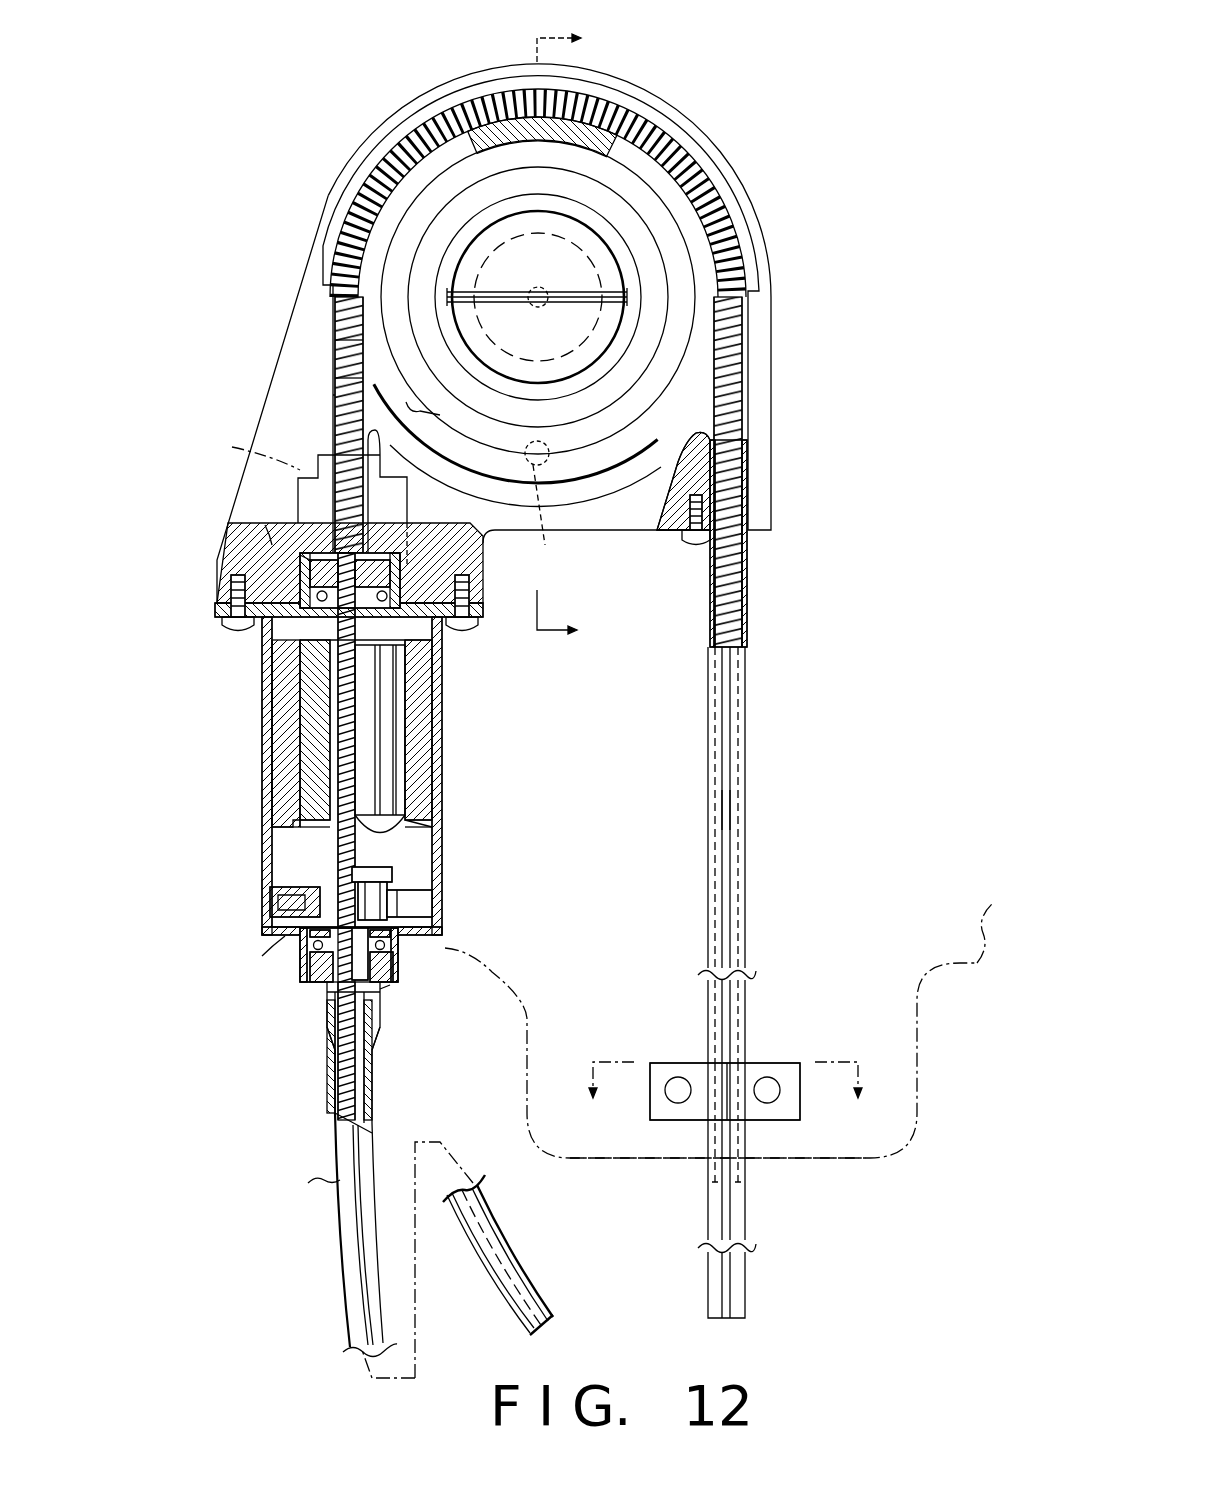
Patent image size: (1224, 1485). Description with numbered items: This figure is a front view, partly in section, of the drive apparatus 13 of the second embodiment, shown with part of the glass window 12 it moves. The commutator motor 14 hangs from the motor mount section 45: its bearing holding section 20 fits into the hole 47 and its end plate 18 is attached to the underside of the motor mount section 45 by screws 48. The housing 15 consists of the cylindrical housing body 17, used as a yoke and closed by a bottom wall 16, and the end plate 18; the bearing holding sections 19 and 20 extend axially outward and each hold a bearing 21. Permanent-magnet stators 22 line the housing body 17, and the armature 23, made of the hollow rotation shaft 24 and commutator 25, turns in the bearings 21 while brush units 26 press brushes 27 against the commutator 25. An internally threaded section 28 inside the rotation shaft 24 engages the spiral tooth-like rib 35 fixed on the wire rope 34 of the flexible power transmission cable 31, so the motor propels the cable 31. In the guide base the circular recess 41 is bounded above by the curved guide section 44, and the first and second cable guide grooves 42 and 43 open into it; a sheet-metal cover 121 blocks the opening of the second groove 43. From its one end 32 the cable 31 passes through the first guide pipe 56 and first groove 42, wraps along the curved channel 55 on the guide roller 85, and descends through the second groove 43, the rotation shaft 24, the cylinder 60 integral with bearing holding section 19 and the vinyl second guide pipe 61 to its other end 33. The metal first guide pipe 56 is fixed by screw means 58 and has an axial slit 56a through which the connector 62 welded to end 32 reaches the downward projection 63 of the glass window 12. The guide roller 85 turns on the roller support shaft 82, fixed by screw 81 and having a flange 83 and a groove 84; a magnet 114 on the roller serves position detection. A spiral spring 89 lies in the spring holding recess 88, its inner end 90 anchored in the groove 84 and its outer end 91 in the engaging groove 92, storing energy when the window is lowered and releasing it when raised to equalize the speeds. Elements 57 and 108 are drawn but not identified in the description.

The glass window 12 is at (680, 1140).
The drive apparatus 13 is at (298, 266).
The commutator motor 14 is at (445, 776).
The housing 15 is at (245, 938).
The bottom wall 16 is at (425, 503).
The housing body 17 is at (262, 745).
The end plate 18 is at (256, 640).
The bearing holding section 19 is at (302, 984).
The bearing holding section 20 is at (302, 530).
The bearings 21 is at (384, 989).
The stators 22 is at (416, 736).
The armature 23 is at (411, 830).
The rotation shaft 24 is at (314, 830).
The commutator 25 is at (390, 876).
The brush units 26 is at (280, 886).
The brushes 27 is at (296, 934).
The internally threaded section 28 is at (270, 525).
The power transmission cable 31 is at (338, 395).
The one end of the cable 32 is at (743, 1178).
The other end of the cable 33 is at (493, 1235).
The wire rope 34 is at (338, 378).
The spiral tooth-like rib 35 is at (337, 355).
The recess 41 is at (584, 502).
The first cable guide groove 42 is at (742, 504).
The second cable guide groove 43 is at (337, 433).
The curved guide section 44 is at (641, 86).
The motor mount section 45 is at (481, 580).
The hole 47 is at (398, 560).
The screws 48 is at (230, 600).
The curved channel 55 is at (420, 126).
The first guide pipe 56 is at (746, 862).
The slit 56a is at (733, 808).
The boss 57 is at (680, 533).
The screw means 58 is at (692, 548).
The cylinder 60 is at (379, 1016).
The second guide pipe 61 is at (333, 1235).
The connector 62 is at (672, 1061).
The downward projection 63 is at (618, 1146).
The screw 81 is at (530, 306).
The roller support shaft 82 is at (596, 266).
The flange 83 is at (690, 124).
The groove 84 is at (500, 298).
The guide roller 85 is at (724, 240).
The spring holding recess 88 is at (405, 237).
The spiral spring 89 is at (455, 190).
The inner end of the spiral spring 90 is at (566, 303).
The outer end of the spiral spring 91 is at (412, 430).
The engaging groove 92 is at (380, 491).
The pad 108 is at (460, 102).
The magnet 114 is at (541, 511).
The cover 121 is at (242, 448).